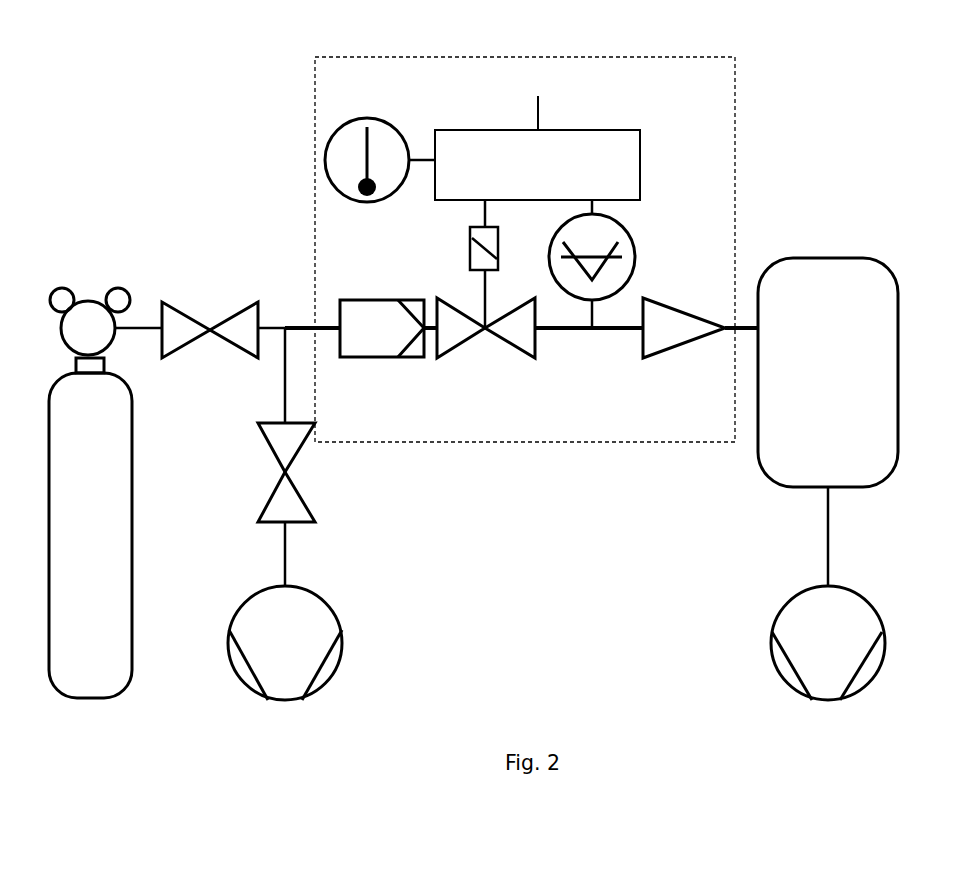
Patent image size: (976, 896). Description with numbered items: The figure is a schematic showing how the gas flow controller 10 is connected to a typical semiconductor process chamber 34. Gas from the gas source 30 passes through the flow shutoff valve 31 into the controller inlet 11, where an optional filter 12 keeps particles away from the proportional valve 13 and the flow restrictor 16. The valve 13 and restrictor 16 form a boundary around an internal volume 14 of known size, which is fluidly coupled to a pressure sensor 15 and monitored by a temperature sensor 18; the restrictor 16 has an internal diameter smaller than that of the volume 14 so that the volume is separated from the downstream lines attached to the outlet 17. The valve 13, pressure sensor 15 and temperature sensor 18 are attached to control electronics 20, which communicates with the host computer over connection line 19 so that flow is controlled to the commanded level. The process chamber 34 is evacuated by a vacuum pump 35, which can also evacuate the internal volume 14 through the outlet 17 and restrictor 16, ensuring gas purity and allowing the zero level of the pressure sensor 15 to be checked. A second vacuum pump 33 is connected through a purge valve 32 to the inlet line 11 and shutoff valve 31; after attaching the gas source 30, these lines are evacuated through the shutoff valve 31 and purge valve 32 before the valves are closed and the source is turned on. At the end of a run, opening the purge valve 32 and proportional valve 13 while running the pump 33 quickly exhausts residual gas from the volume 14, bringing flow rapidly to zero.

The gas flow controller 10 is at (362, 56).
The inlet 11 is at (328, 325).
The filter 12 is at (363, 300).
The valve 13 is at (460, 300).
The internal volume 14 is at (560, 331).
The pressure sensor 15 is at (633, 250).
The flow restrictor 16 is at (665, 300).
The outlet 17 is at (728, 333).
The temperature sensor 18 is at (360, 118).
The connection line 19 is at (538, 108).
The control electronics 20 is at (640, 148).
The gas source 30 is at (133, 432).
The flow shutoff valve 31 is at (180, 345).
The purge valve 32 is at (265, 503).
The vacuum pump 33 is at (247, 597).
The process chamber 34 is at (797, 255).
The vacuum pump 35 is at (772, 650).